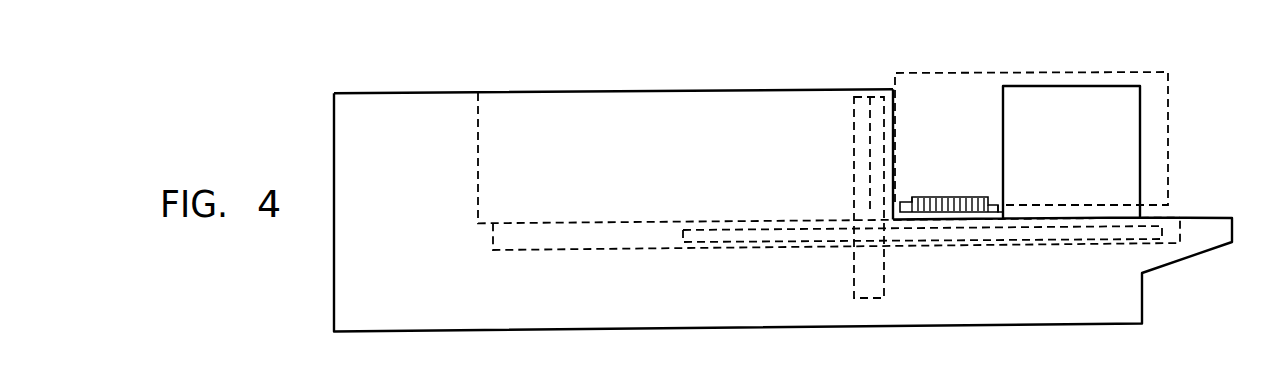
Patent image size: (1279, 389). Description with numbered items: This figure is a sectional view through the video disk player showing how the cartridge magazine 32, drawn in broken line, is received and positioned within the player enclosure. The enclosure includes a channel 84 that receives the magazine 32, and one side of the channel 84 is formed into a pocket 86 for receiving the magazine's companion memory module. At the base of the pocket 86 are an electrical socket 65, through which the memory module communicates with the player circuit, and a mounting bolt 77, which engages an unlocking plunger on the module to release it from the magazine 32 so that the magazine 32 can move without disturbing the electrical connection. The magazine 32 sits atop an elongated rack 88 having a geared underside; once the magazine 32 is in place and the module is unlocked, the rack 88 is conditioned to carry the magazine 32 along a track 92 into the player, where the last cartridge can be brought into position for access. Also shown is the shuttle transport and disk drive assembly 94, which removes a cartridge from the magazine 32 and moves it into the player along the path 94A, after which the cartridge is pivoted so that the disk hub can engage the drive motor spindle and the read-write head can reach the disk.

The magazine 32 is at (1082, 73).
The electrical socket 65 is at (999, 214).
The mounting bolt 77 is at (907, 201).
The channel 84 is at (478, 130).
The pocket 86 is at (896, 103).
The rack 88 is at (713, 236).
The track 92 is at (574, 251).
The shuttle transport and disk drive assembly 94 is at (853, 118).
The path 94A is at (870, 150).